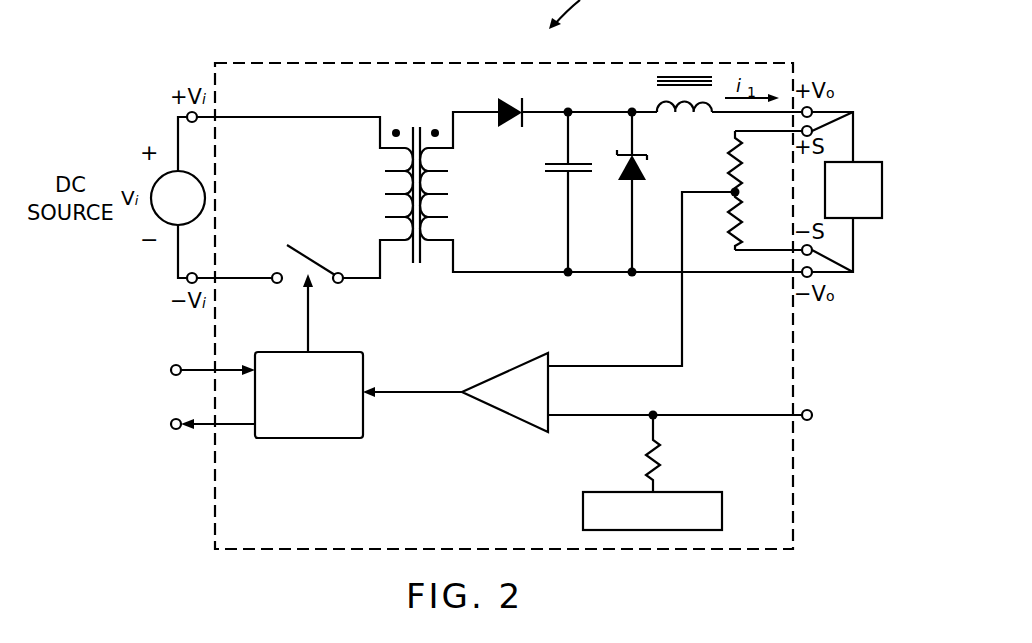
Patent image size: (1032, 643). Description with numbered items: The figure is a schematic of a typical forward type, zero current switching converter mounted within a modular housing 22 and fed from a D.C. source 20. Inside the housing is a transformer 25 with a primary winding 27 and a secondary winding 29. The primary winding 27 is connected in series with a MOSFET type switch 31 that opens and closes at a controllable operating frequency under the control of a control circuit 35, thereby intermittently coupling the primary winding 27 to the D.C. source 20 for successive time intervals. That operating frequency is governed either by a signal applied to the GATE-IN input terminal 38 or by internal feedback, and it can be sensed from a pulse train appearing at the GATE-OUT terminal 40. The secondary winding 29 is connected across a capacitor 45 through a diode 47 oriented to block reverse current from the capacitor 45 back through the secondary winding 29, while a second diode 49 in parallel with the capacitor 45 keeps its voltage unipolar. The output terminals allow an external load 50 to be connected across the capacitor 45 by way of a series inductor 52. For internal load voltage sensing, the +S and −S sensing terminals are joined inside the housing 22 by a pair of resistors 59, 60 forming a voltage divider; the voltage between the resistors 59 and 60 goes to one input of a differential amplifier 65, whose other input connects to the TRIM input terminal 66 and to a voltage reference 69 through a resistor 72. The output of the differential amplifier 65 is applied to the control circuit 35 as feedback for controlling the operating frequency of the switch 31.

The D.C. source 20 is at (186, 210).
The modular housing 22 is at (793, 493).
The transformer 25 is at (398, 262).
The primary winding 27 is at (393, 172).
The secondary winding 29 is at (453, 172).
The MOSFET type switch 31 is at (300, 243).
The control circuit 35 is at (317, 434).
The GATE-IN input terminal 38 is at (170, 374).
The GATE-OUT terminal 40 is at (170, 426).
The capacitor 45 is at (557, 172).
The diode 47 is at (505, 98).
The second diode 49 is at (645, 172).
The external load 50 is at (866, 215).
The series inductor 52 is at (667, 104).
The resistor 59 is at (744, 158).
The resistor 60 is at (744, 221).
The differential amplifier 65 is at (526, 404).
The TRIM input terminal 66 is at (813, 420).
The voltage reference 69 is at (583, 503).
The resistor 72 is at (660, 448).